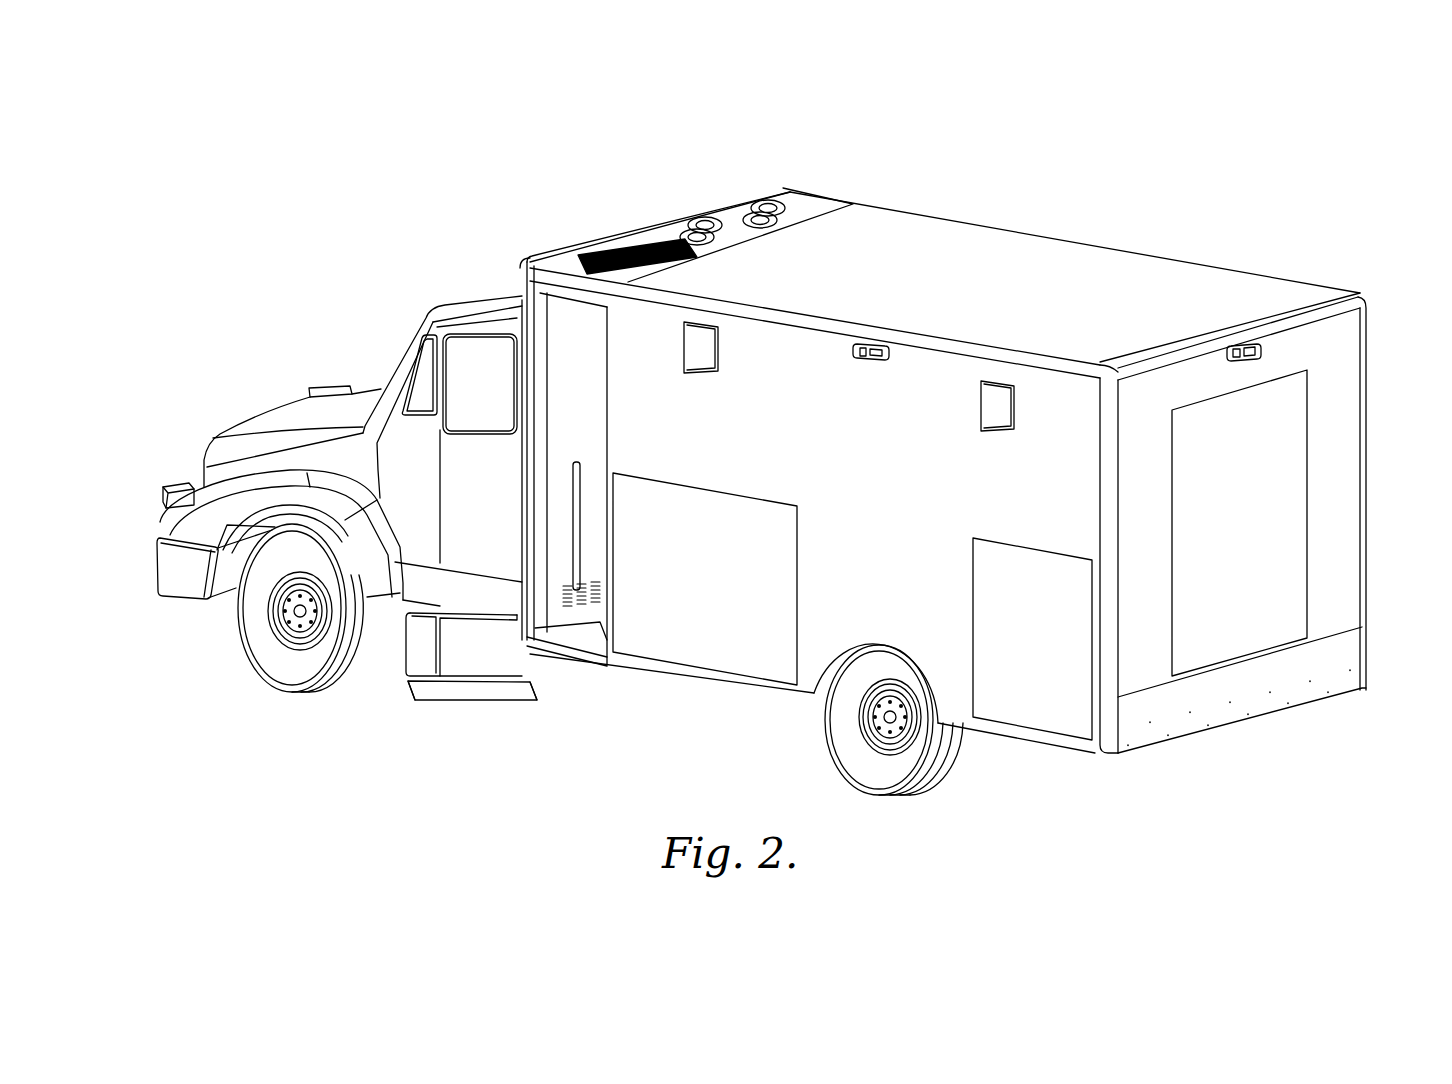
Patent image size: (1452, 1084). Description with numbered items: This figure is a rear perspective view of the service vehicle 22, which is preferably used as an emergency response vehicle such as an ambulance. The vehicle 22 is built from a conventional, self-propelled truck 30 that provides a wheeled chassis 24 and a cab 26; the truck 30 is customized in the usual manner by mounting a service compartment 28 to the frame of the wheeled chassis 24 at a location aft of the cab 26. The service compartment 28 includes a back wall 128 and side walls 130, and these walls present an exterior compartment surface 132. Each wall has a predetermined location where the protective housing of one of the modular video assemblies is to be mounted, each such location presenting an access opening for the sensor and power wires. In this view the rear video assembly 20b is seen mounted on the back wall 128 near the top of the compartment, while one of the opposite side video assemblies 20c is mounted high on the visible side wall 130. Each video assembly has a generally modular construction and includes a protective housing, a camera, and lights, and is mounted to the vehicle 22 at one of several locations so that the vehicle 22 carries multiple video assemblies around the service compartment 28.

The service vehicle 22 is at (1228, 191).
The wheeled chassis 24 is at (868, 736).
The cab 26 is at (463, 535).
The service compartment 28 is at (882, 228).
The truck 30 is at (445, 318).
The rear video assembly 20b is at (1244, 347).
The side video assembly 20c is at (862, 340).
The back wall 128 is at (1340, 372).
The side wall 130 is at (940, 650).
The exterior compartment surface 132 is at (1142, 402).